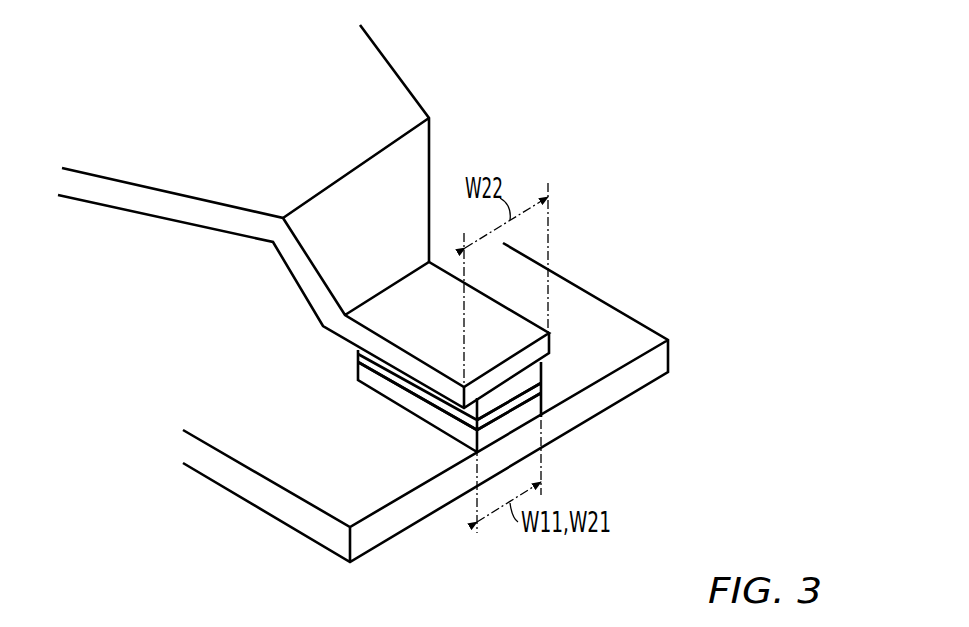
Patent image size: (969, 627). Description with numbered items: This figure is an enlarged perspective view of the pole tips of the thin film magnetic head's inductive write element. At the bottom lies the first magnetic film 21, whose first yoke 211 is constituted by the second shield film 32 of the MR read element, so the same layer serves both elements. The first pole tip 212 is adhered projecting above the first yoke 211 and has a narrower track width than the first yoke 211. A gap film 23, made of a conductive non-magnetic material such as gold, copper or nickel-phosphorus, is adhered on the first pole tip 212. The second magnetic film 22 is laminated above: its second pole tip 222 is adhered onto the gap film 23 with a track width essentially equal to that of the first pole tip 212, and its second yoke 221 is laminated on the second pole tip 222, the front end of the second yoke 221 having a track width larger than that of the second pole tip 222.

The first magnetic film 21 is at (246, 506).
The first yoke 211 is at (470, 402).
The second shield film 32 is at (641, 326).
The first pole tip 212 is at (425, 412).
The second magnetic film 22 is at (331, 222).
The second yoke 221 is at (395, 90).
The second pole tip 222 is at (530, 373).
The gap film 23 is at (361, 357).